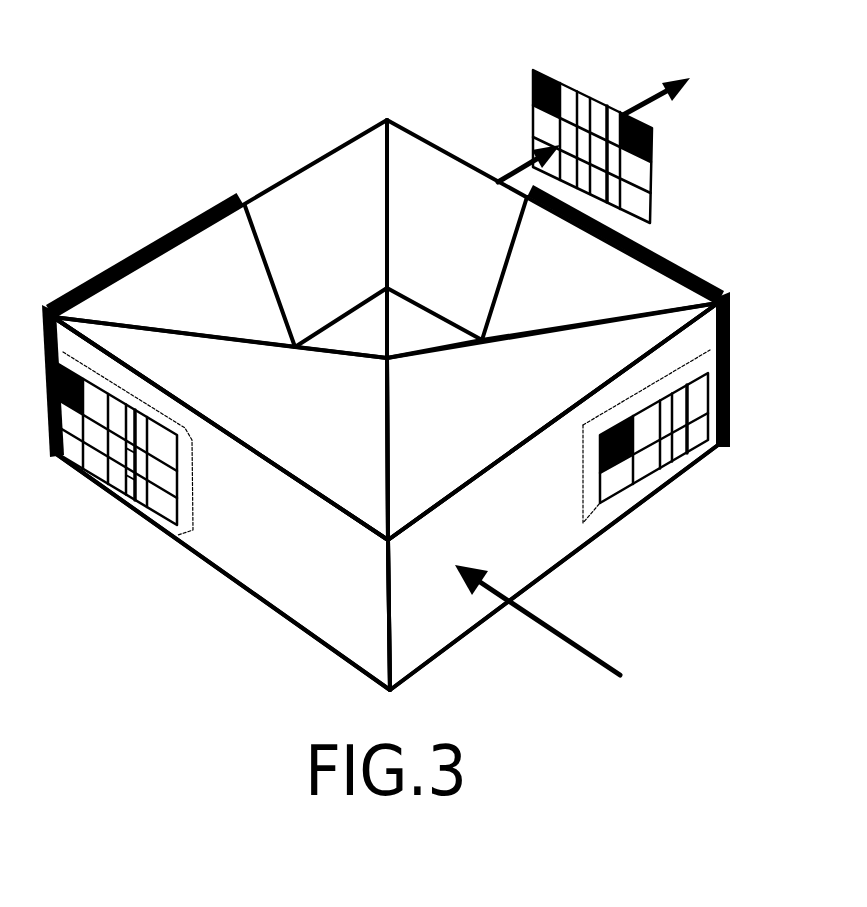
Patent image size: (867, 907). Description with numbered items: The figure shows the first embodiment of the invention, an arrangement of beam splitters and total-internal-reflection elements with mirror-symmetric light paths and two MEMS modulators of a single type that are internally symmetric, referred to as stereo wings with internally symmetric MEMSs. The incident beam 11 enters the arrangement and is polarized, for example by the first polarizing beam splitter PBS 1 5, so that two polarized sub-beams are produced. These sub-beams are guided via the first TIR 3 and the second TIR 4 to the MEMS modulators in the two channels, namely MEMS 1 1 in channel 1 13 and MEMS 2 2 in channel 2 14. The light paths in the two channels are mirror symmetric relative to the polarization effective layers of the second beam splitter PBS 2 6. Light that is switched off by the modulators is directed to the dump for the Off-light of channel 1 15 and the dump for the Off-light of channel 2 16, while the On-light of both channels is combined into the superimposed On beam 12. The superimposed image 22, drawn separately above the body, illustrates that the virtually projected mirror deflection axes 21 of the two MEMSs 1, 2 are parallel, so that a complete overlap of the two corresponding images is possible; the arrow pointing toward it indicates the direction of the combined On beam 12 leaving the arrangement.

The MEMS 1 is at (113, 443).
The MEMS 2 is at (659, 436).
The TIR 1 3 is at (220, 428).
The TIR 2 4 is at (552, 421).
The PBS 1 5 is at (406, 449).
The PBS 2 6 is at (405, 204).
The incident beam 11 is at (571, 636).
The superimposed "On" beam 12 is at (689, 71).
The channel 1 13 is at (221, 503).
The channel 2 14 is at (553, 496).
The dump for Off-light of channel 1 15 is at (142, 325).
The dump for Off-light of channel 2 16 is at (655, 316).
The mirror deflection axis 21 is at (127, 492).
The superimposed image 22 is at (575, 117).